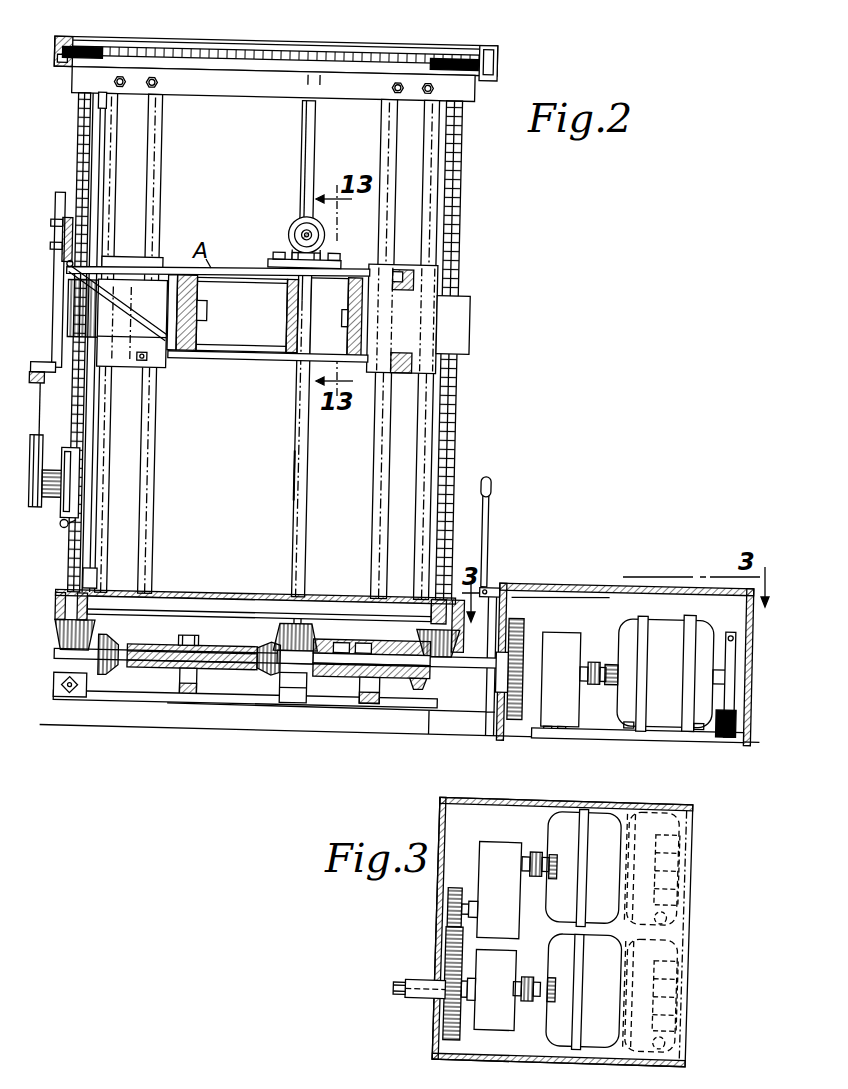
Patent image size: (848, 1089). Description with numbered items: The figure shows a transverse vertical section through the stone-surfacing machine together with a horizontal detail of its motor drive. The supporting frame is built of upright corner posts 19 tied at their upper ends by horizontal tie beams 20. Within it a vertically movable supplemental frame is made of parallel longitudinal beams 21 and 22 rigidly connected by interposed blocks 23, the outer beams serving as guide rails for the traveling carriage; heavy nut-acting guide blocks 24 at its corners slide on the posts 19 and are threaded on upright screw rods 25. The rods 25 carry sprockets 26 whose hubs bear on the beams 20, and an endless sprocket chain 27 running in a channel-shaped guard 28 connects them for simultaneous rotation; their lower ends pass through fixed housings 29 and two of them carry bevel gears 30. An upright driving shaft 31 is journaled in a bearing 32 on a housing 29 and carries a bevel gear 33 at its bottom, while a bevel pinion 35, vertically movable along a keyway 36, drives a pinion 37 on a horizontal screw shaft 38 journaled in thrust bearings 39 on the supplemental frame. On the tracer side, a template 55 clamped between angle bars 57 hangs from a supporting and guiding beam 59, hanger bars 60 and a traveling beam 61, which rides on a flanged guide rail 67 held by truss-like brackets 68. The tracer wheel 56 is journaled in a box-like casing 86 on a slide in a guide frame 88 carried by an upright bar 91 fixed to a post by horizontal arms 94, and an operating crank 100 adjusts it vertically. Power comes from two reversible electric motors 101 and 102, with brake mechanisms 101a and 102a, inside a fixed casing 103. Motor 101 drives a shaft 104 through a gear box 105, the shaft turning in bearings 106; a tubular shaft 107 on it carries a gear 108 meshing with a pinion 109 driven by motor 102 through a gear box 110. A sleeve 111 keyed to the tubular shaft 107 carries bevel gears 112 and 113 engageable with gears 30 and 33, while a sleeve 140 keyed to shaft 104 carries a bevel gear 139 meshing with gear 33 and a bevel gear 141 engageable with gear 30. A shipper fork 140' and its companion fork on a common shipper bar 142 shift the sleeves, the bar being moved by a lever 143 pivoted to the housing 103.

In FIG. 2, the corner posts 19 is at (158, 171).
In FIG. 2, the tie beams 20 is at (245, 89).
In FIG. 2, the longitudinal beams 21 is at (181, 360).
In FIG. 2, the longitudinal beams 22 is at (203, 306).
In FIG. 2, the blocks 23 is at (235, 338).
In FIG. 2, the guide blocks 24 is at (130, 371).
In FIG. 2, the screw-threaded rods 25 is at (80, 146).
In FIG. 2, the sprockets 26 is at (92, 52).
In FIG. 2, the sprocket chain 27 is at (201, 54).
In FIG. 2, the channel-shaped guard 28 is at (501, 58).
In FIG. 2, the fixed housings 29 is at (199, 594).
In FIG. 2, the bevel gears 30 is at (430, 628).
In FIG. 2, the driving shaft 31 is at (300, 172).
In FIG. 2, the bearing 32 is at (280, 600).
In FIG. 2, the bevel gear 33 is at (313, 628).
In FIG. 2, the bevel pinion 35 is at (287, 255).
In FIG. 2, the keyway 36 is at (296, 470).
In FIG. 2, the bevel pinion 37 is at (297, 222).
In FIG. 2, the screw-threaded shaft 38 is at (300, 236).
In FIG. 2, the thrust bearings 39 is at (320, 259).
In FIG. 2, the template 55 is at (40, 412).
In FIG. 2, the tracer wheel 56 is at (33, 460).
In FIG. 2, the angle bars 57 is at (32, 380).
In FIG. 2, the supporting and guiding beam 59 is at (40, 366).
In FIG. 2, the hanger bars 60 is at (53, 297).
In FIG. 2, the traveling beam 61 is at (60, 238).
In FIG. 2, the guide rail 67 is at (64, 268).
In FIG. 2, the truss-like brackets 68 is at (121, 305).
In FIG. 2, the box-like casing 86 is at (48, 490).
In FIG. 2, the guide frame 88 is at (64, 515).
In FIG. 2, the upright bar 91 is at (93, 428).
In FIG. 2, the horizontal arms 94 is at (97, 101).
In FIG. 2, the operating crank 100 is at (65, 533).
In FIG. 2, the electric motor 101 is at (666, 674).
In FIG. 3, the electric motor 101 is at (585, 992).
In FIG. 2, the brake mechanism 101a is at (729, 698).
In FIG. 3, the brake mechanism 101a is at (690, 978).
In FIG. 3, the electric motor 102 is at (586, 868).
In FIG. 3, the brake mechanism 102a is at (688, 867).
In FIG. 2, the casing 103 is at (575, 574).
In FIG. 3, the casing 103 is at (567, 803).
In FIG. 2, the shaft 104 is at (62, 652).
In FIG. 3, the shaft 104 is at (398, 985).
In FIG. 2, the gear box 105 is at (62, 686).
In FIG. 3, the gear box 105 is at (495, 1017).
In FIG. 2, the bearings 106 is at (297, 702).
In FIG. 2, the tubular shaft 107 is at (470, 668).
In FIG. 3, the tubular shaft 107 is at (425, 1000).
In FIG. 2, the gear 108 is at (528, 630).
In FIG. 3, the gear 108 is at (446, 1032).
In FIG. 3, the pinion 109 is at (448, 913).
In FIG. 3, the gear box 110 is at (508, 916).
In FIG. 2, the sleeve 111 is at (352, 680).
In FIG. 2, the bevel gear 112 is at (423, 688).
In FIG. 2, the bevel gear 113 is at (340, 645).
In FIG. 2, the bevel gear 139 is at (279, 678).
In FIG. 2, the sleeve 140 is at (192, 705).
In FIG. 2, the shipper fork 140' is at (195, 703).
In FIG. 2, the bevel gear 141 is at (107, 680).
In FIG. 2, the shipper bar 142 is at (233, 705).
In FIG. 2, the lever 143 is at (490, 540).